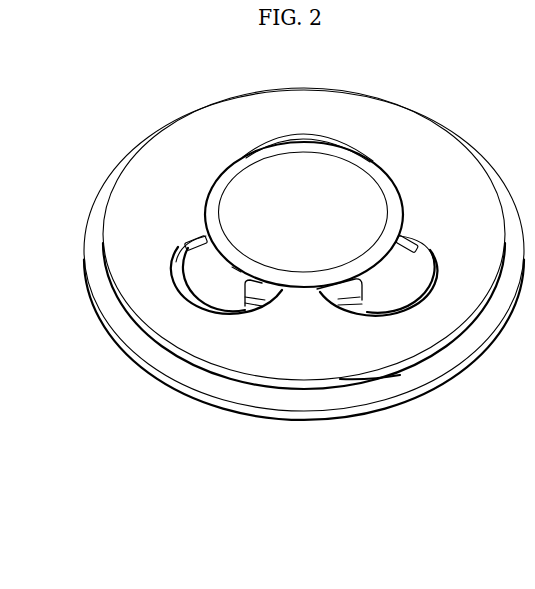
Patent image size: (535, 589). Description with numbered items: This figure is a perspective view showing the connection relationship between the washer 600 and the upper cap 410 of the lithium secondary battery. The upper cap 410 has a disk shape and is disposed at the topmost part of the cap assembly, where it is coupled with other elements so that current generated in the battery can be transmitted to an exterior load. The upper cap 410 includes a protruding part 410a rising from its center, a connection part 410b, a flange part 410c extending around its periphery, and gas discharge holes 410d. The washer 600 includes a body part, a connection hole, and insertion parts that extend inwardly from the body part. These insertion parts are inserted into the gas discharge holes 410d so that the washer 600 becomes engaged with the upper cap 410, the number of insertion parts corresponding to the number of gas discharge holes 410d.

The washer 600 is at (162, 325).
The upper cap 410 is at (336, 345).
The protruding part 410a is at (286, 246).
The connection part 410b is at (398, 277).
The flange part 410c is at (379, 434).
The gas discharge holes 410d is at (340, 292).